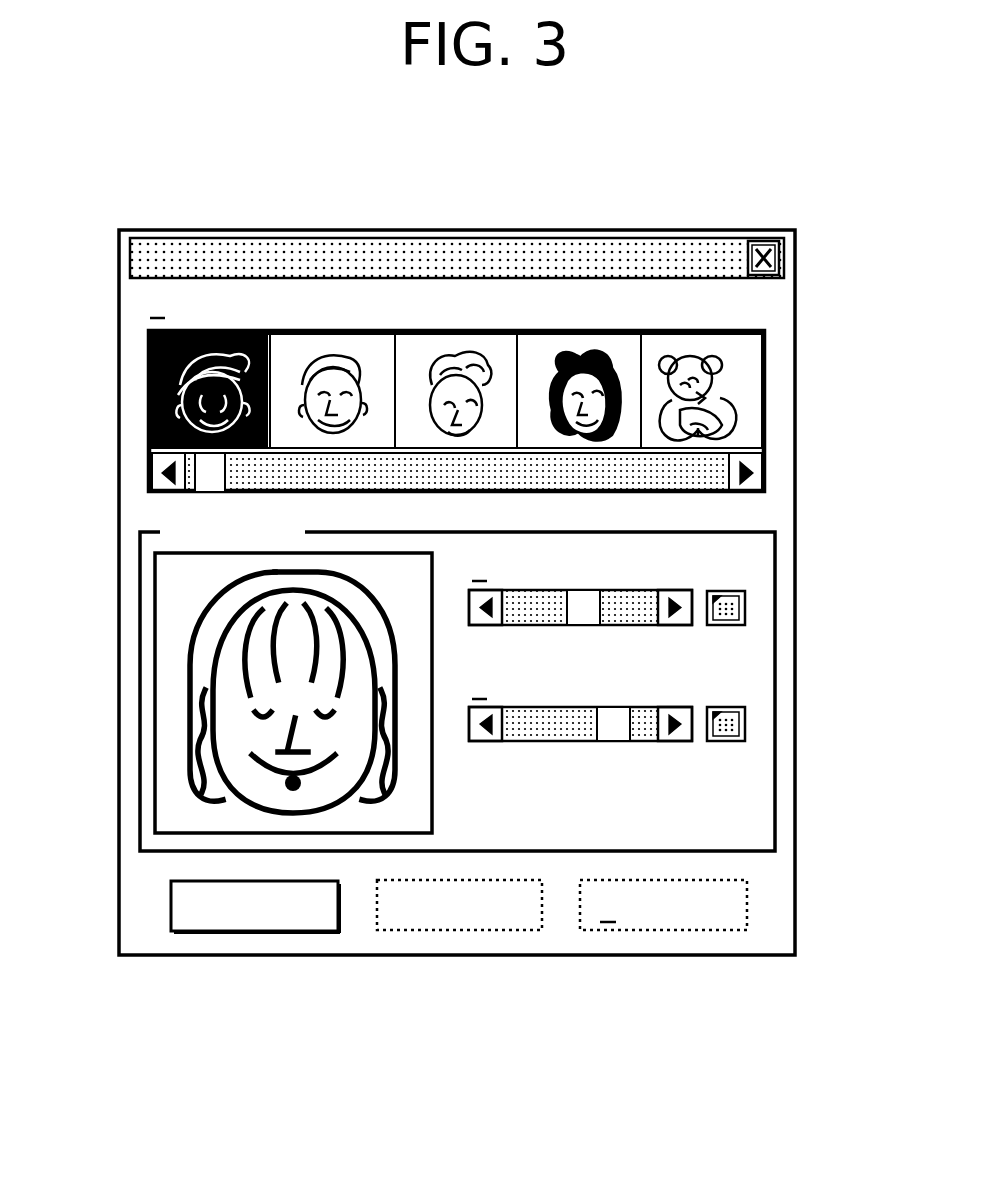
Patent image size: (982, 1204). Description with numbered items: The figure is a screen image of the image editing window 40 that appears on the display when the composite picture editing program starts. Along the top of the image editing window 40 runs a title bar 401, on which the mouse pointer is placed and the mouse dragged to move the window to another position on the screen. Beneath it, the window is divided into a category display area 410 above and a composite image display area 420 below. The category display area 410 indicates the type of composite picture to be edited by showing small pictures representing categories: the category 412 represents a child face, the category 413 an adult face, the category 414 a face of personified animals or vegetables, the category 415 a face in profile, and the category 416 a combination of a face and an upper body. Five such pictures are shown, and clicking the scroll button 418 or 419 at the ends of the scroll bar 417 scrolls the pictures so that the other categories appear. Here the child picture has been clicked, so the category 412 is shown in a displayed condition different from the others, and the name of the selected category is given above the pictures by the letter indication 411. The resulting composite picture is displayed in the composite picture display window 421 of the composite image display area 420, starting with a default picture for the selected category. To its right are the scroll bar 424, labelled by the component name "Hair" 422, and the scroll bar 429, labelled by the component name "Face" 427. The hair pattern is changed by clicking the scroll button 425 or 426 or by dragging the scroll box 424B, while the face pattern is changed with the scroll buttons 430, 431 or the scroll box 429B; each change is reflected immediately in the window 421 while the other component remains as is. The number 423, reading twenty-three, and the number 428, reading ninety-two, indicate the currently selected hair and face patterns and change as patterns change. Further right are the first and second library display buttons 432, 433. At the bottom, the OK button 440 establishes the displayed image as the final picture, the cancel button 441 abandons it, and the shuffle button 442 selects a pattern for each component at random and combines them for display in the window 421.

The image editing window 40 is at (782, 300).
The title bar 401 is at (420, 248).
The category display area 410 is at (135, 420).
The letter indication 411 is at (130, 297).
The category picture (child face) 412 is at (155, 358).
The category picture (adult face) 413 is at (290, 333).
The category picture (personified animals or vegetables) 414 is at (505, 335).
The category picture (face in profile) 415 is at (628, 333).
The category picture (face and upper body) 416 is at (752, 393).
The scroll bar 417 is at (685, 475).
The scroll button 418 is at (158, 482).
The scroll button 419 is at (755, 462).
The composite image display area 420 is at (140, 699).
The composite picture display window 421 is at (168, 812).
The component name "Hair" 422 is at (540, 570).
The number indicating selected hair pattern 423 is at (697, 566).
The scroll bar 424 is at (523, 615).
The scroll box 424B is at (592, 615).
The scroll button 425 is at (472, 598).
The scroll button 426 is at (680, 618).
The component name "Face" 427 is at (470, 685).
The number indicating selected face pattern 428 is at (697, 680).
The scroll bar 429 is at (552, 730).
The scroll box 429B is at (617, 732).
The scroll button 430 is at (497, 728).
The scroll button 431 is at (683, 733).
The first library display button 432 is at (747, 607).
The second library display button 433 is at (747, 725).
The OK button 440 is at (217, 920).
The cancel button 441 is at (443, 925).
The shuffle button 442 is at (643, 925).